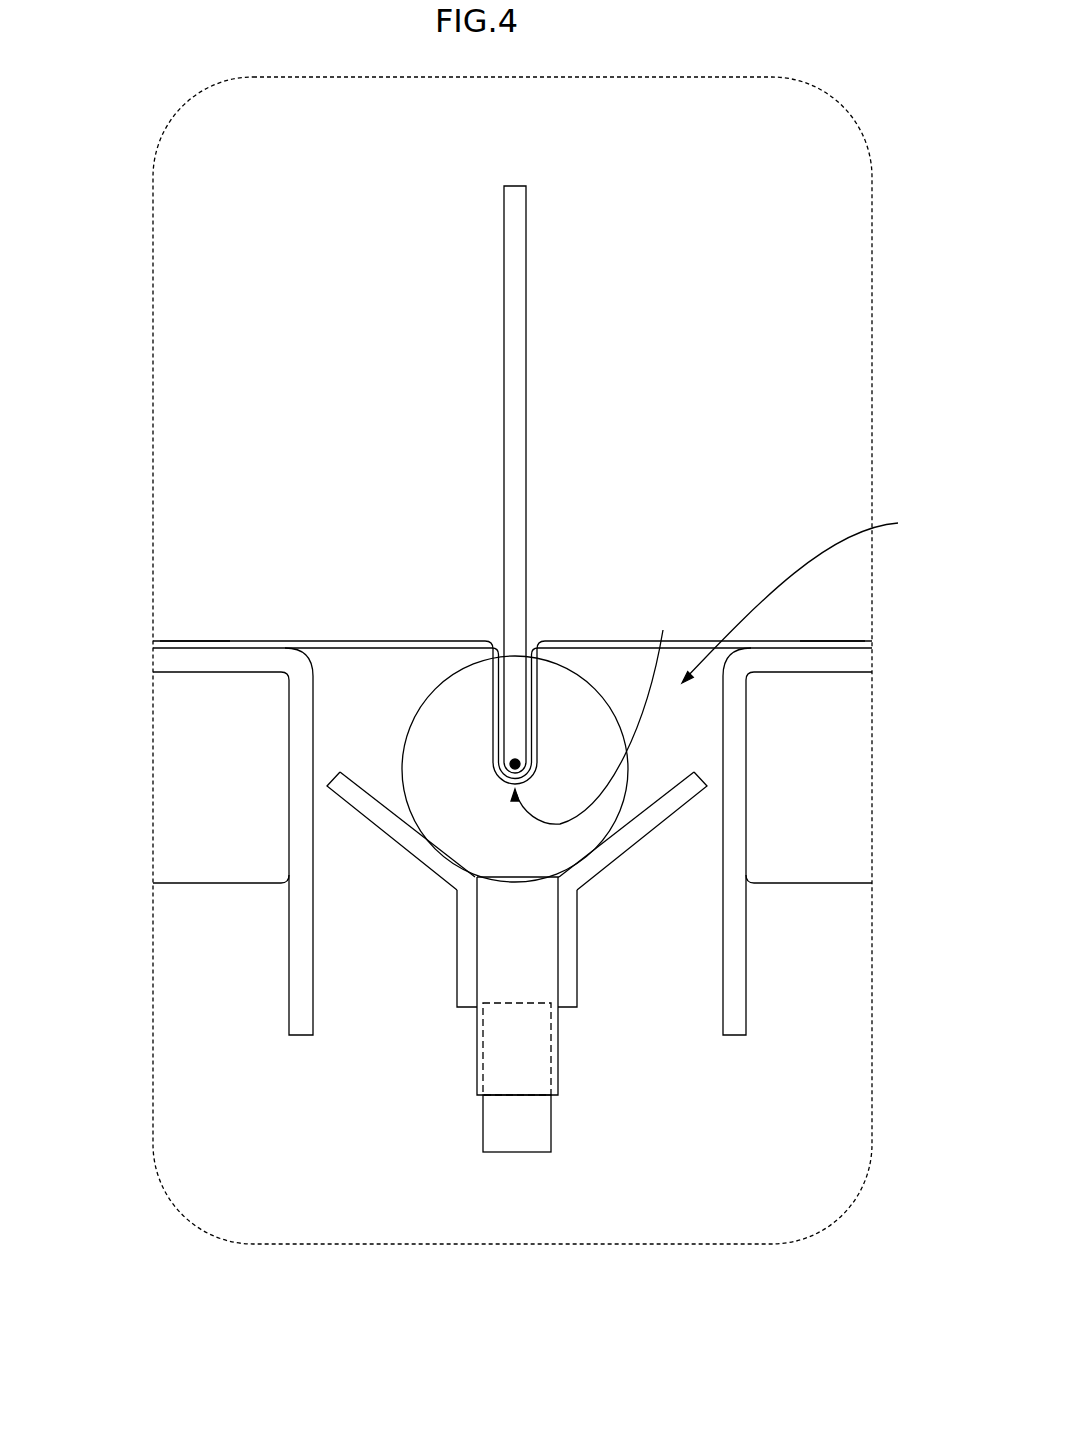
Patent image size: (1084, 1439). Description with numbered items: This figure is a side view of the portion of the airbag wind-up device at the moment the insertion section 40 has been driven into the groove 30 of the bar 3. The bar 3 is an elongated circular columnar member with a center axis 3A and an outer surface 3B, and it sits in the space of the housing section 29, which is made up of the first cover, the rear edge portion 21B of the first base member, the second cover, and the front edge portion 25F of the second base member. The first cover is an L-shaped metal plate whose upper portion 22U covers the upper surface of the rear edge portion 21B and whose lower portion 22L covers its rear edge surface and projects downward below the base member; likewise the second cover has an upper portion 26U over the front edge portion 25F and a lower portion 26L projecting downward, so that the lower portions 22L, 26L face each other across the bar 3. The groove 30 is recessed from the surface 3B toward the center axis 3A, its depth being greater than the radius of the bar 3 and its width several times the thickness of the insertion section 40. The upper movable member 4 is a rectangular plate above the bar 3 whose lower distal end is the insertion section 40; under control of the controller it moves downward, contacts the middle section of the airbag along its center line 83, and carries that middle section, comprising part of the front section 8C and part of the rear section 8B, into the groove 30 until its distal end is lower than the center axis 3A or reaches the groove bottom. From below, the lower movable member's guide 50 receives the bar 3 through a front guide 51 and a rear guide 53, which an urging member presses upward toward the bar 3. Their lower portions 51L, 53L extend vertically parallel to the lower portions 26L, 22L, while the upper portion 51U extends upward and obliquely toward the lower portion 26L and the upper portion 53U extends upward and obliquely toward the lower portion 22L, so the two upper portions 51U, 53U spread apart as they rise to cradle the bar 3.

The bar 3 is at (512, 672).
The center axis 3A is at (516, 758).
The surface 3B is at (420, 703).
The upper movable member 4 is at (527, 259).
The rear section 8B is at (194, 641).
The front section 8C is at (835, 641).
The rear edge portion 21B is at (845, 757).
The upper portion 22U is at (850, 659).
The lower portion 22L is at (738, 998).
The front edge portion 25F is at (190, 798).
The upper portion 26U is at (173, 661).
The lower portion 26L is at (296, 998).
The housing section 29 is at (806, 594).
The groove 30 is at (494, 683).
The insertion section 40 is at (517, 683).
The guide 50 is at (511, 1073).
The front guide 51 is at (385, 1053).
The upper portion 51U is at (384, 835).
The lower portion 51L is at (464, 968).
The rear guide 53 is at (644, 1053).
The upper portion 53U is at (636, 835).
The lower portion 53L is at (570, 963).
The center line 83 is at (594, 711).